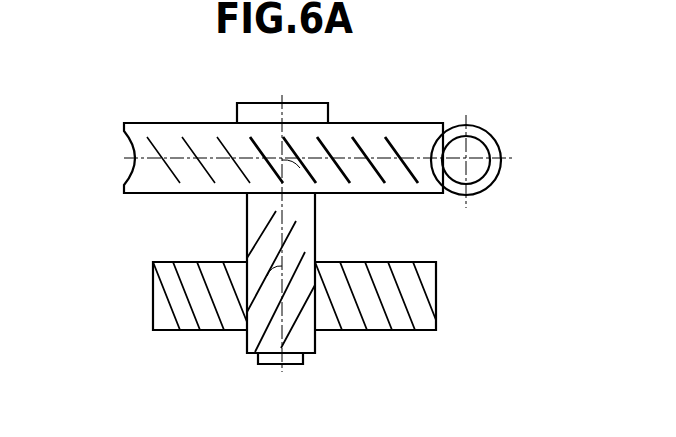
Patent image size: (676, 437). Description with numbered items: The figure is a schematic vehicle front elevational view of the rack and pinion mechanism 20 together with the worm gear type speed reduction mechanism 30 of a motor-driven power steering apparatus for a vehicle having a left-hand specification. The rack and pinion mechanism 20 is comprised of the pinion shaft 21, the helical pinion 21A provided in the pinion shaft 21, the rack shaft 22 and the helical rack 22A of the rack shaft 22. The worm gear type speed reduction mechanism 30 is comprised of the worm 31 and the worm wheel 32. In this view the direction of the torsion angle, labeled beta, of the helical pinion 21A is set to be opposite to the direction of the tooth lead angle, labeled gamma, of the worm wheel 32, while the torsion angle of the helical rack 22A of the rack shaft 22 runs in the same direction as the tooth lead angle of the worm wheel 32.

The rack and pinion mechanism 20 is at (303, 298).
The pinion shaft 21 is at (243, 235).
The pinion 21A is at (255, 323).
The rack shaft 22 is at (152, 284).
The rack 22A is at (170, 313).
The worm gear type speed reduction mechanism 30 is at (453, 96).
The worm 31 is at (497, 133).
The worm wheel 32 is at (135, 122).